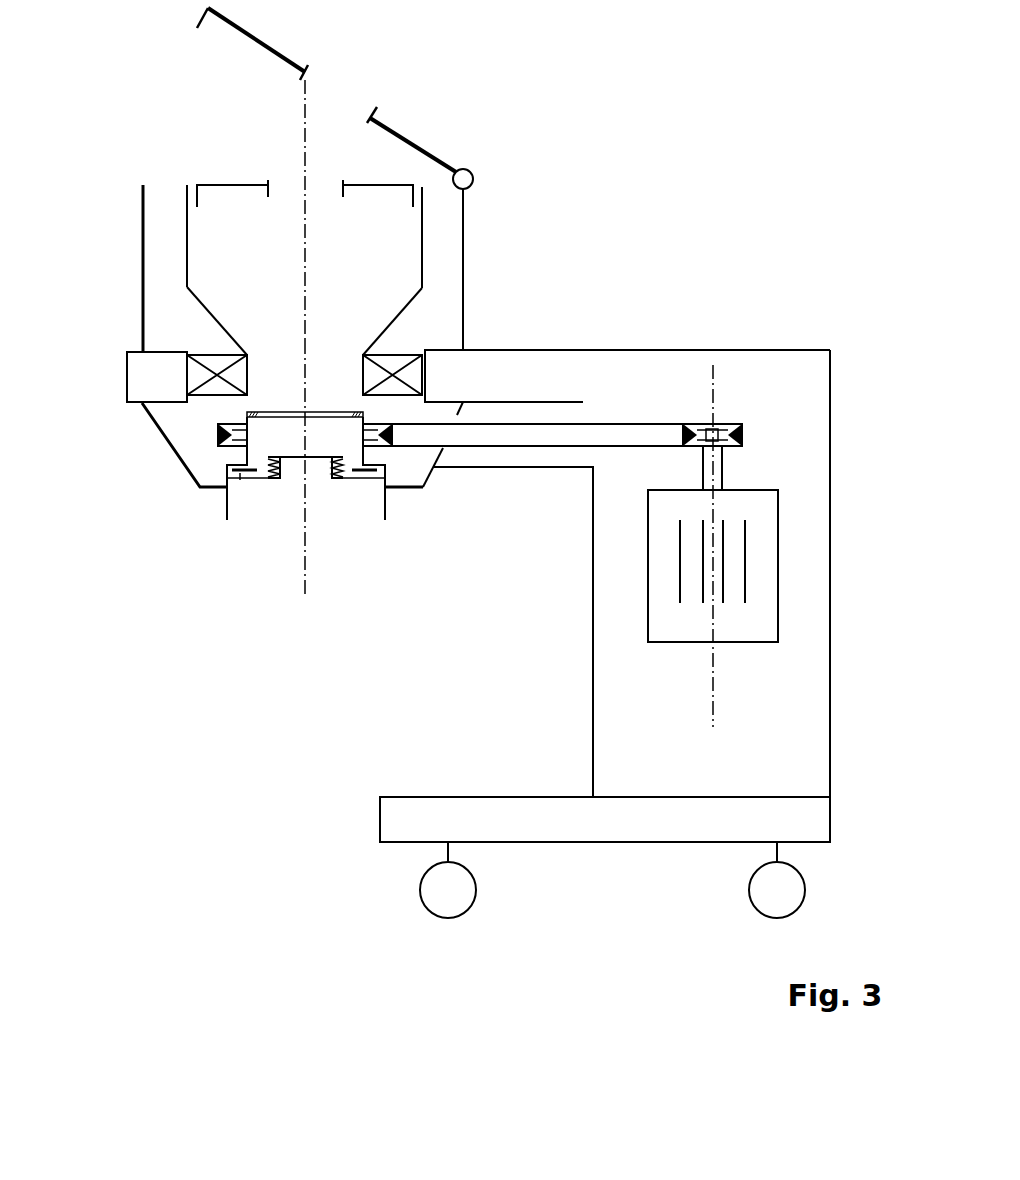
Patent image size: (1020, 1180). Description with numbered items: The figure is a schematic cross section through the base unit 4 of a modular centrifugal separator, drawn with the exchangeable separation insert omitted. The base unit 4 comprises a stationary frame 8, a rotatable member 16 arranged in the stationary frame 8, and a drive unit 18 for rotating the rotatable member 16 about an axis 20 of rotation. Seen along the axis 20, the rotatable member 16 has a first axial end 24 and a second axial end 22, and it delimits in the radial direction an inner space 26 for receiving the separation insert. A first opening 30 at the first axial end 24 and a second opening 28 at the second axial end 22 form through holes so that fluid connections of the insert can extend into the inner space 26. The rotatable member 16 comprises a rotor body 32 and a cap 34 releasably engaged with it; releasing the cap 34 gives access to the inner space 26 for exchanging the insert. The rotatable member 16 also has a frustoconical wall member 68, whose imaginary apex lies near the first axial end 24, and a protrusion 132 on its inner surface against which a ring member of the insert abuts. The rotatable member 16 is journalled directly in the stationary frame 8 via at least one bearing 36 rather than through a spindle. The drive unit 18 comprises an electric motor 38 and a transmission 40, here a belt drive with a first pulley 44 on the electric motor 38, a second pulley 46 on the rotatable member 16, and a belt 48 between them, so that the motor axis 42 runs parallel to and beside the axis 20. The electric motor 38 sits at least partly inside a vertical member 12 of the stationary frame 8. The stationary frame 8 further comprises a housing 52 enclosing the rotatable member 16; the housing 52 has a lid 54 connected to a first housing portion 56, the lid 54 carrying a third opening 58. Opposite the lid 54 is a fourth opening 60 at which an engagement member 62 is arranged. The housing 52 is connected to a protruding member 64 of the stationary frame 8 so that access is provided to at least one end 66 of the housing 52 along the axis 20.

The base unit 4 is at (737, 283).
The stationary frame 8 is at (632, 370).
The vertical member 12 is at (815, 560).
The rotatable member 16 is at (185, 300).
The drive unit 18 is at (572, 520).
The axis of rotation 20 is at (305, 555).
The second axial end 22 is at (178, 157).
The first axial end 24 is at (235, 480).
The inner space 26 is at (336, 263).
The second opening 28 is at (297, 170).
The first opening 30 is at (262, 475).
The rotor body 32 is at (185, 238).
The cap 34 is at (227, 185).
The bearing 36 is at (218, 387).
The electric motor 38 is at (663, 617).
The transmission 40 is at (495, 457).
The axis of rotation of the electric motor 42 is at (713, 677).
The first pulley 44 is at (720, 428).
The second pulley 46 is at (238, 440).
The belt 48 is at (545, 435).
The housing 52 is at (517, 188).
The lid 54 is at (412, 140).
The first housing portion 56 is at (465, 233).
The third opening 58 is at (352, 78).
The fourth opening 60 is at (333, 505).
The engagement member 62 is at (387, 508).
The protruding member 64 is at (135, 378).
The end of the housing 66 is at (122, 172).
The frustoconical wall member 68 is at (402, 312).
The protrusion 132 is at (255, 408).